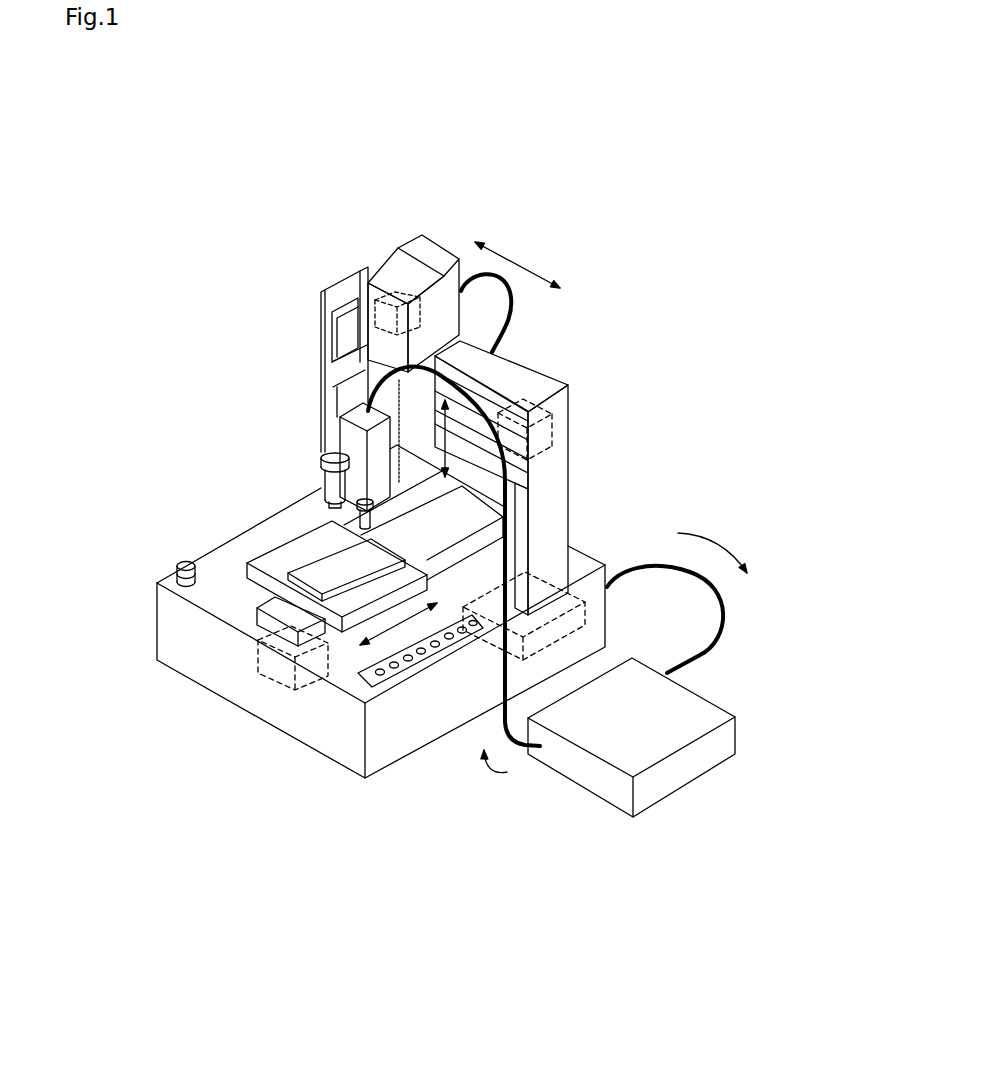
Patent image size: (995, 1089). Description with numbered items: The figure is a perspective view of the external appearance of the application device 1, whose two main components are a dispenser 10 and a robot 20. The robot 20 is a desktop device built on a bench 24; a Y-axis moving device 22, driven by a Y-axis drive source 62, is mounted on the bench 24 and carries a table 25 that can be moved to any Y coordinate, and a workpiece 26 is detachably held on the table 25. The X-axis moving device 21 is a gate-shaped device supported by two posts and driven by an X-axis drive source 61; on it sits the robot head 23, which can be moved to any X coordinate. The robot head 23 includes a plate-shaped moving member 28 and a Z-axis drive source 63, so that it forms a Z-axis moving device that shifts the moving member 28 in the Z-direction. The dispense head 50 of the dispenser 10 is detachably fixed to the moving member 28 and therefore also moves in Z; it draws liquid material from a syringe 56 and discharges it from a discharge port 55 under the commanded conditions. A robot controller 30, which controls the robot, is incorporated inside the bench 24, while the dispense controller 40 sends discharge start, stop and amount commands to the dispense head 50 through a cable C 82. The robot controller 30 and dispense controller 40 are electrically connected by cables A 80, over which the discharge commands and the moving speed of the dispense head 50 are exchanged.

The application device 1 is at (770, 210).
The dispenser 10 is at (733, 804).
The robot 20 is at (633, 468).
The X-axis moving device 21 is at (596, 438).
The Y-axis moving device 22 is at (215, 736).
The robot head 23 is at (557, 220).
The bench 24 is at (381, 663).
The table 25 is at (258, 653).
The workpiece 26 is at (346, 719).
The moving member 28 is at (346, 286).
The robot controller 30 is at (543, 613).
The dispense controller 40 is at (689, 711).
The dispense head 50 is at (290, 396).
The discharge port 55 is at (238, 510).
The syringe 56 is at (220, 448).
The X-axis drive source 61 is at (533, 365).
The Y-axis drive source 62 is at (262, 771).
The Z-axis drive source 63 is at (439, 228).
The cables A 80 is at (721, 603).
The cable C 82 is at (454, 644).